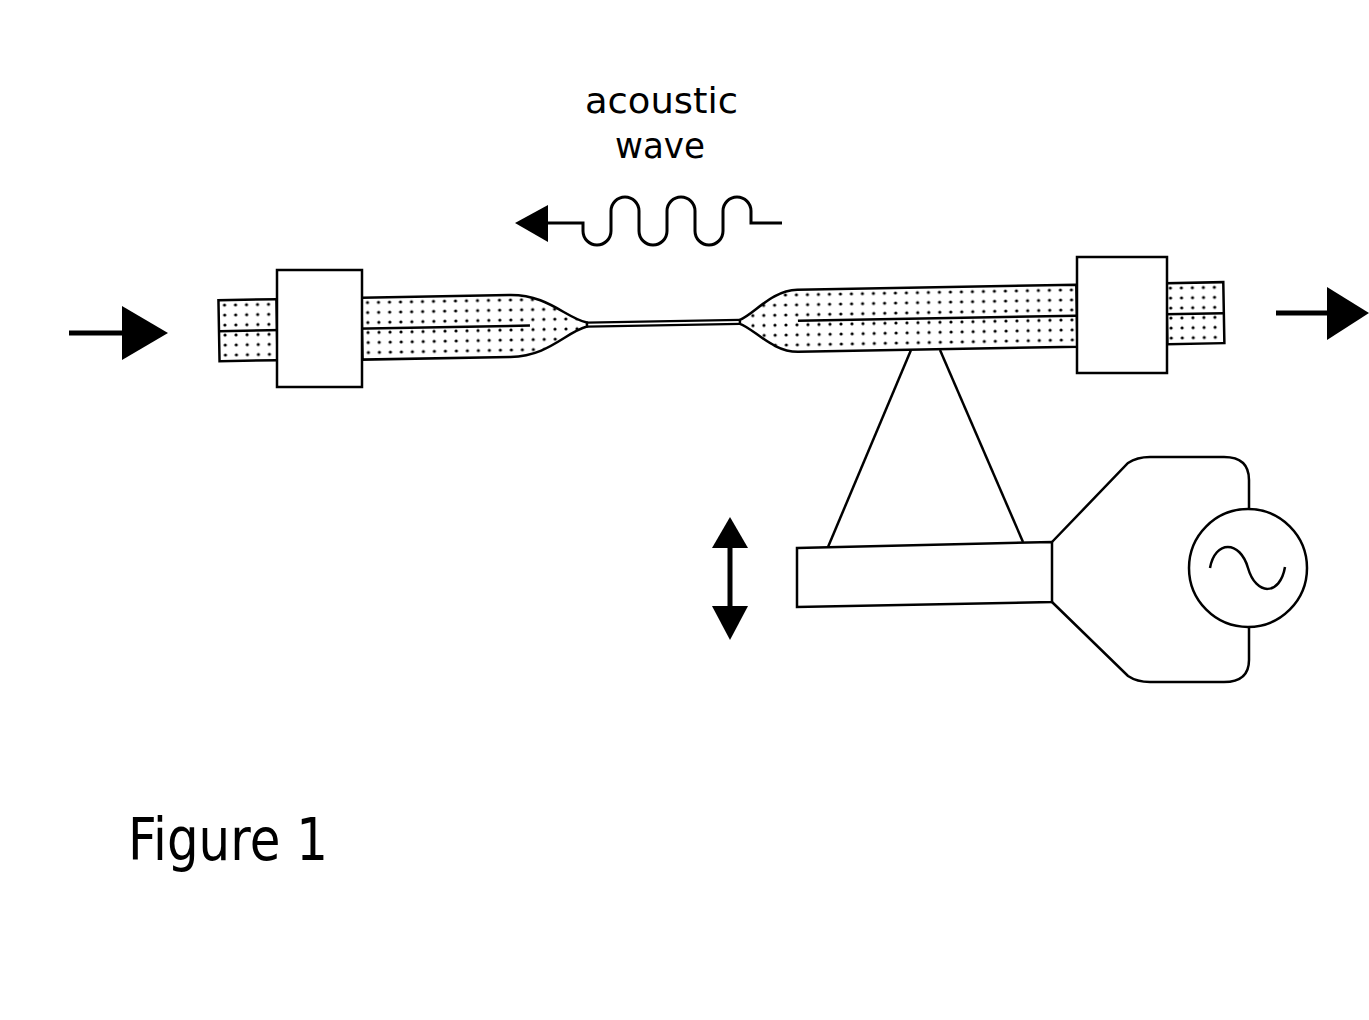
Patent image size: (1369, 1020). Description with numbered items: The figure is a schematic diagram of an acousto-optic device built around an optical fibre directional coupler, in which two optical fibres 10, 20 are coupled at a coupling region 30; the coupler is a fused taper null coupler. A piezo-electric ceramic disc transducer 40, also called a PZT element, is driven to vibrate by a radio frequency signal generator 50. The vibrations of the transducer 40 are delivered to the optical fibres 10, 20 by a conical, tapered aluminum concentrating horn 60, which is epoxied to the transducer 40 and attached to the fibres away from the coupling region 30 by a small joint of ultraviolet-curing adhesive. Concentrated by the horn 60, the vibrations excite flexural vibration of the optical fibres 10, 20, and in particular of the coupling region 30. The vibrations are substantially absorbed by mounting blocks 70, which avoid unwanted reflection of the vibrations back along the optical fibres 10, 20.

The optical fibre 10 is at (250, 300).
The optical fibre 20 is at (250, 362).
The coupling region 30 is at (727, 342).
The piezo-electric ceramic disc transducer 40 is at (930, 606).
The radio frequency signal generator 50 is at (1298, 604).
The conical aluminum concentrating horn 60 is at (985, 444).
The mounting blocks 70 is at (312, 270).